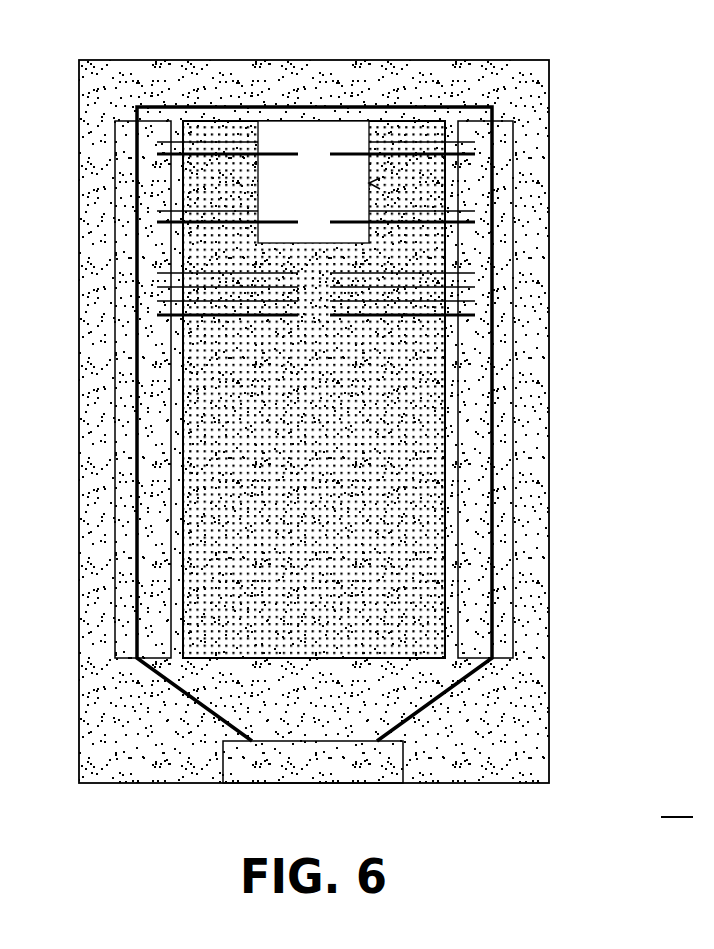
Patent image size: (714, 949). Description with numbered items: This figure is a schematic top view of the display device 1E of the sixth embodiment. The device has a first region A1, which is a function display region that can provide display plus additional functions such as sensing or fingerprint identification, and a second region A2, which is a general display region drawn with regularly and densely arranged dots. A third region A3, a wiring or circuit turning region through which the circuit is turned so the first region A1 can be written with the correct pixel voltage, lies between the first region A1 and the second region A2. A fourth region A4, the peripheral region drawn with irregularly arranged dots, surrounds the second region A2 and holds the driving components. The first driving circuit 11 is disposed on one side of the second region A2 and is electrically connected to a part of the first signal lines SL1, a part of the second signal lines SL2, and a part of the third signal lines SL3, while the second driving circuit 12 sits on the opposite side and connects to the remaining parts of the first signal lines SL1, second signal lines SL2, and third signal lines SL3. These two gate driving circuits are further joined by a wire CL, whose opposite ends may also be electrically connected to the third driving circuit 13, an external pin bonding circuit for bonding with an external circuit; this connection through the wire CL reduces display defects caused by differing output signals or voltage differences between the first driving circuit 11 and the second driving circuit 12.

The first driving circuit 11 is at (113, 397).
The second driving circuit 12 is at (513, 434).
The third driving circuit 13 is at (407, 762).
The wire CL is at (492, 535).
The first signal lines SL1 is at (218, 155).
The second signal lines SL2 is at (222, 142).
The third signal lines SL3 is at (216, 273).
The first region A1 is at (330, 197).
The second region A2 is at (330, 398).
The third region A3 is at (371, 183).
The fourth region A4 is at (520, 739).
The display device 1E is at (677, 803).